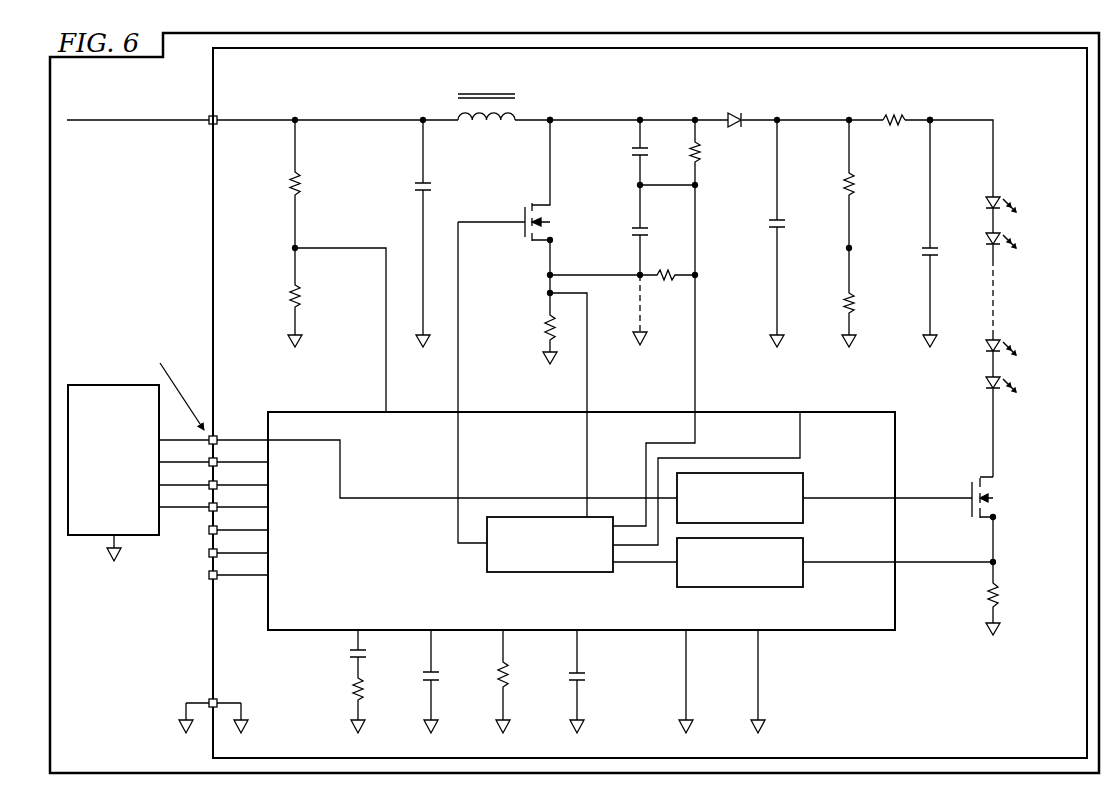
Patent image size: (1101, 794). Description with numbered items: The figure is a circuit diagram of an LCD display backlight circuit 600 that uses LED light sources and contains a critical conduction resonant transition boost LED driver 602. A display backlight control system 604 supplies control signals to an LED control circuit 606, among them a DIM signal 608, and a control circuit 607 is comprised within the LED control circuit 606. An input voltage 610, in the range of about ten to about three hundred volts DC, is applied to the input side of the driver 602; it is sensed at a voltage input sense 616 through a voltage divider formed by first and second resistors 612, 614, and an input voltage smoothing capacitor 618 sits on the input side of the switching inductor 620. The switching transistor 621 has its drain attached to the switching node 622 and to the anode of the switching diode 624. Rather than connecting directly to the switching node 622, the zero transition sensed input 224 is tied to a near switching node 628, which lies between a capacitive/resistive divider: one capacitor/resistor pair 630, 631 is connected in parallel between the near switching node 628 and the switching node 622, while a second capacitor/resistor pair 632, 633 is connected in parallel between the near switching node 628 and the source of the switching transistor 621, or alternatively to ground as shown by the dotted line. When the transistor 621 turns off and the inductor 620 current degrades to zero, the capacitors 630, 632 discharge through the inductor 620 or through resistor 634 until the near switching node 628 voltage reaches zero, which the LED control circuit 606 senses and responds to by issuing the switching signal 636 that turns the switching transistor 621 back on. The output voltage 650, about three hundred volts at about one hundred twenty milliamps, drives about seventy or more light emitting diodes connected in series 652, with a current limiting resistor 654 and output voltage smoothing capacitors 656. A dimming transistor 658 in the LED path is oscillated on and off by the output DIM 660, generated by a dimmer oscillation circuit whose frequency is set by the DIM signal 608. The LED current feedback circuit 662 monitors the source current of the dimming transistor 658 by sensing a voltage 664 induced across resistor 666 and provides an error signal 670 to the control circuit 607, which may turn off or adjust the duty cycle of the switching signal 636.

The LCD display backlight circuit 600 is at (116, 268).
The resonant transition boost LED driver 602 is at (956, 686).
The display backlight control system 604 is at (88, 385).
The LED control circuit 606 is at (820, 632).
The control circuit 607 is at (486, 558).
The DIM signal 608 is at (252, 438).
The input voltage 610 is at (184, 119).
The R1 resistor 612 is at (290, 184).
The R2 resistor 614 is at (290, 293).
The voltage input sense 616 is at (384, 407).
The input voltage smoothing capacitor 618 is at (415, 187).
The switching inductor 620 is at (496, 123).
The switching transistor 621 is at (522, 233).
The switching node 622 is at (556, 118).
The switching diode 624 is at (737, 128).
The near switching node 628 is at (636, 185).
The capacitor 630 is at (630, 152).
The resistor 631 is at (700, 165).
The capacitor 632 is at (630, 233).
The resistor 633 is at (666, 286).
The resistor 634 is at (544, 321).
The switching signal 636 is at (461, 409).
The zero transition sensed input 224 is at (697, 409).
The output voltage 650 is at (936, 114).
The light emitting diodes connected in series 652 is at (1024, 190).
The current limiting resistor 654 is at (895, 128).
The output voltage smoothing capacitor 656 is at (767, 223).
The dimming transistor 658 is at (968, 490).
The output DIM 660 is at (932, 503).
The LED current feedback circuit 662 is at (804, 574).
The voltage 664 is at (958, 567).
The resistor 666 is at (1000, 598).
The error signal 670 is at (651, 566).